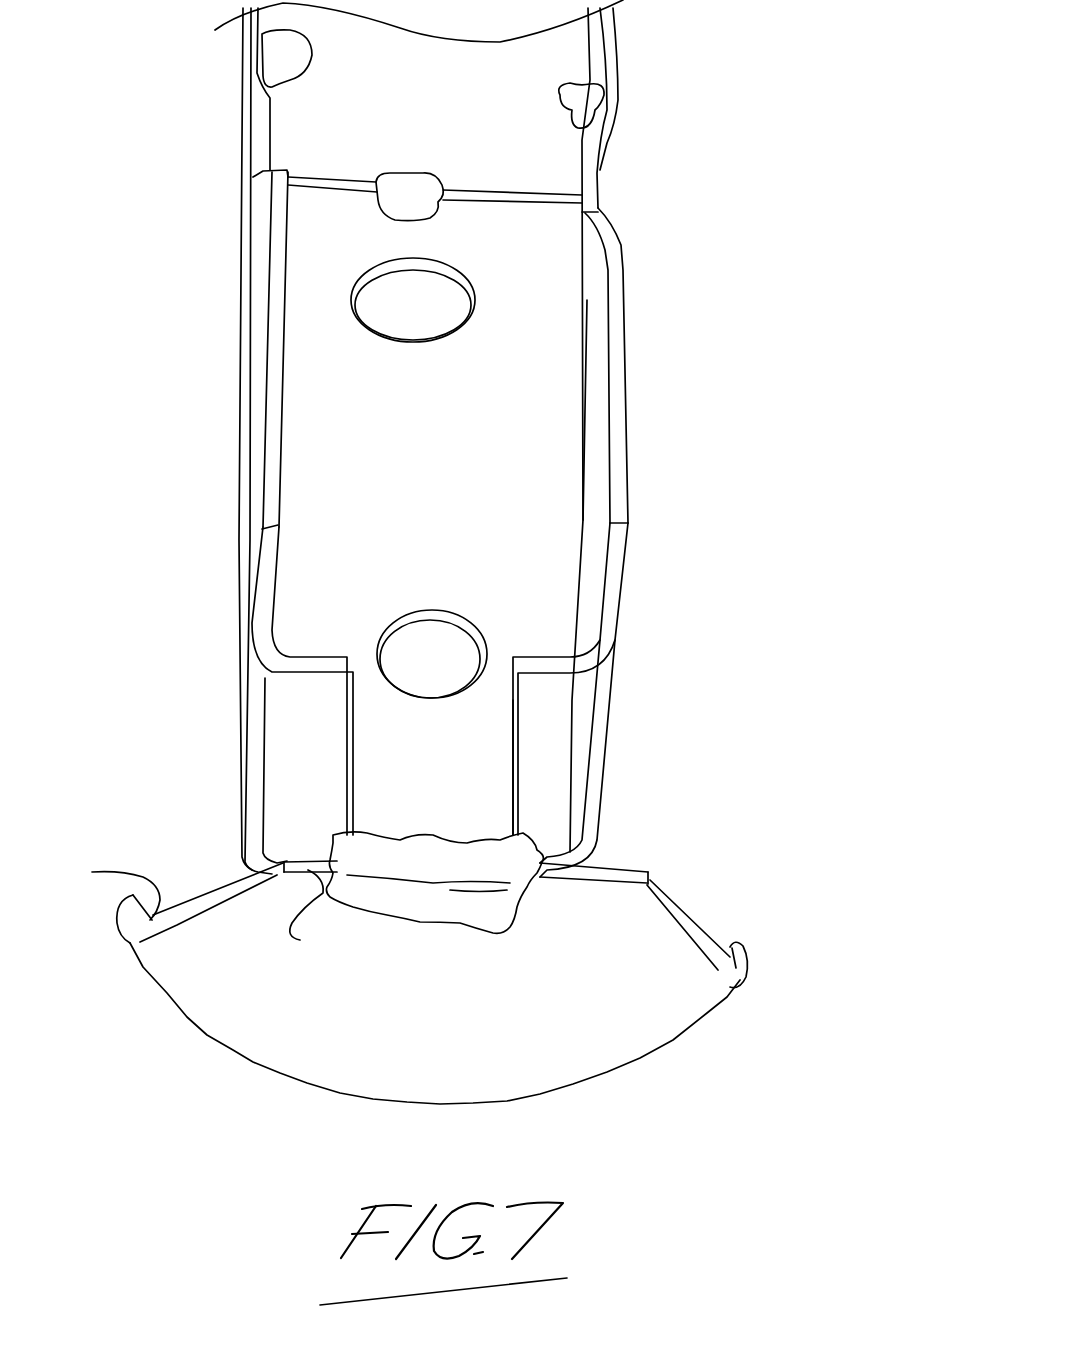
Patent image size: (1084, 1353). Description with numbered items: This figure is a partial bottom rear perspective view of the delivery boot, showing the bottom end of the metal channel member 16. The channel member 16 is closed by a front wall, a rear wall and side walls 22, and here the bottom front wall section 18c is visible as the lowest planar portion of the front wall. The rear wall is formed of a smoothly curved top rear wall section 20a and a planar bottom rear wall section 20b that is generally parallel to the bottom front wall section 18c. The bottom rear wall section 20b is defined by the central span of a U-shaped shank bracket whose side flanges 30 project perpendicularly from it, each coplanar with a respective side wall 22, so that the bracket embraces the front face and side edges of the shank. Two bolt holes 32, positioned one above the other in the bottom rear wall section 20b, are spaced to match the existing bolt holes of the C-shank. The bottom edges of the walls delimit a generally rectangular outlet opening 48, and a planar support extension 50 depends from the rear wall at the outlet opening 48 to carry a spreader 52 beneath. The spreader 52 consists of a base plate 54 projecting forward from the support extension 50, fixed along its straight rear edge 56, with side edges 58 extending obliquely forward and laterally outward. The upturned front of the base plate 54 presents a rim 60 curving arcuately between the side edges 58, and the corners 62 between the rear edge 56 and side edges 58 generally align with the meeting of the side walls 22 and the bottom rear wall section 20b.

The channel member 16 is at (672, 480).
The bottom front wall section 18c is at (307, 747).
The top rear wall section 20a is at (522, 163).
The bottom rear wall section 20b is at (533, 340).
The side walls 22 is at (245, 661).
The side flanges 30 is at (270, 347).
The bolt holes 32 is at (397, 270).
The outlet opening 48 is at (305, 815).
The support extension 50 is at (463, 795).
The spreader 52 is at (647, 830).
The base plate 54 is at (508, 1057).
The rear edge 56 is at (316, 920).
The side edges 58 is at (203, 910).
The rim 60 is at (92, 872).
The corners 62 is at (287, 867).